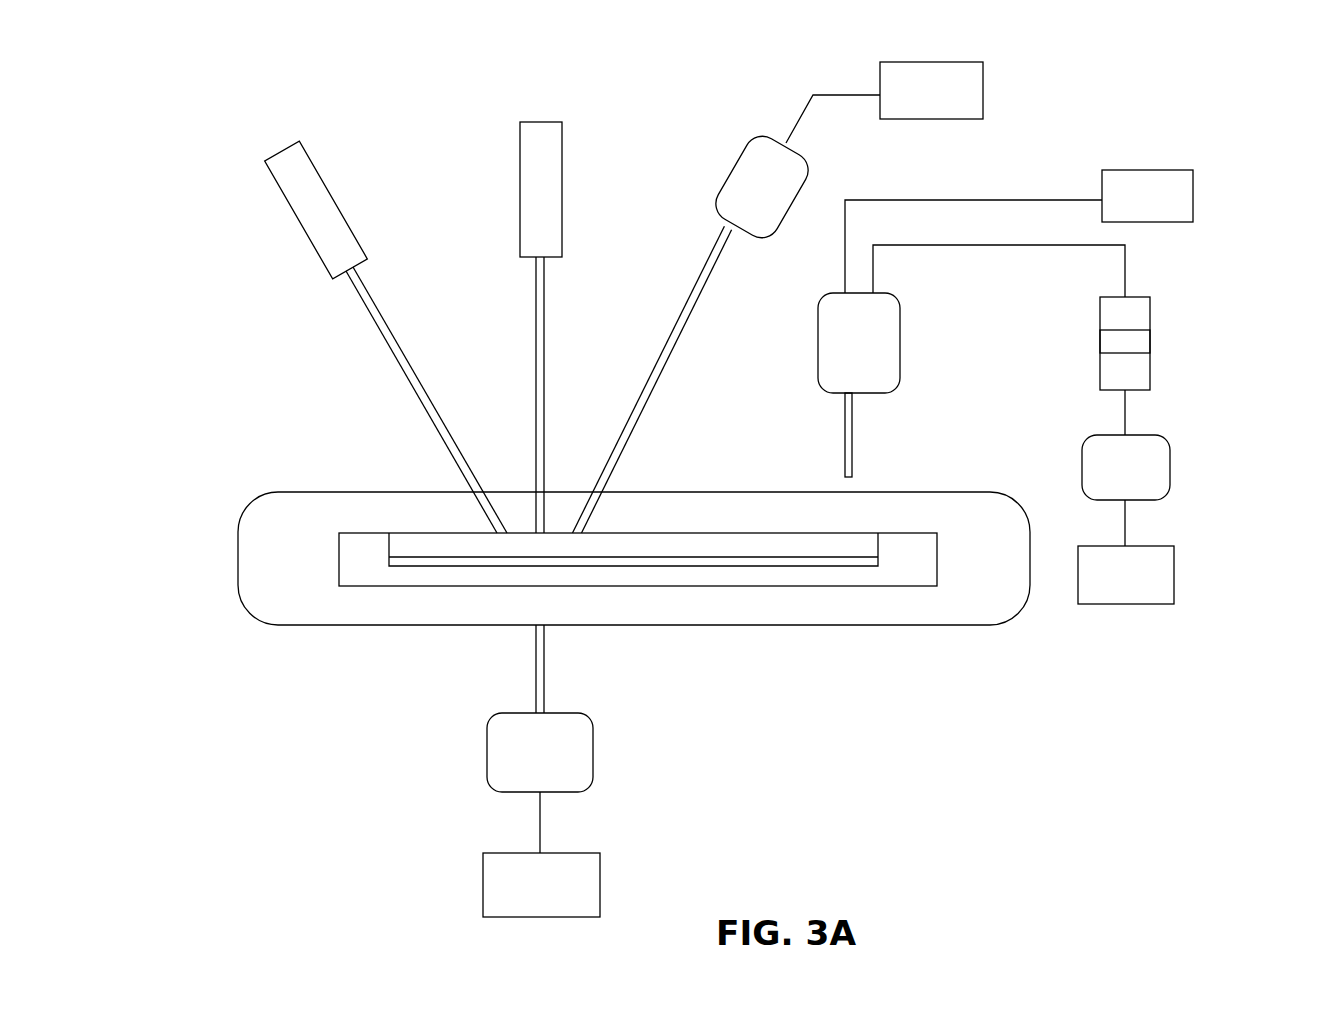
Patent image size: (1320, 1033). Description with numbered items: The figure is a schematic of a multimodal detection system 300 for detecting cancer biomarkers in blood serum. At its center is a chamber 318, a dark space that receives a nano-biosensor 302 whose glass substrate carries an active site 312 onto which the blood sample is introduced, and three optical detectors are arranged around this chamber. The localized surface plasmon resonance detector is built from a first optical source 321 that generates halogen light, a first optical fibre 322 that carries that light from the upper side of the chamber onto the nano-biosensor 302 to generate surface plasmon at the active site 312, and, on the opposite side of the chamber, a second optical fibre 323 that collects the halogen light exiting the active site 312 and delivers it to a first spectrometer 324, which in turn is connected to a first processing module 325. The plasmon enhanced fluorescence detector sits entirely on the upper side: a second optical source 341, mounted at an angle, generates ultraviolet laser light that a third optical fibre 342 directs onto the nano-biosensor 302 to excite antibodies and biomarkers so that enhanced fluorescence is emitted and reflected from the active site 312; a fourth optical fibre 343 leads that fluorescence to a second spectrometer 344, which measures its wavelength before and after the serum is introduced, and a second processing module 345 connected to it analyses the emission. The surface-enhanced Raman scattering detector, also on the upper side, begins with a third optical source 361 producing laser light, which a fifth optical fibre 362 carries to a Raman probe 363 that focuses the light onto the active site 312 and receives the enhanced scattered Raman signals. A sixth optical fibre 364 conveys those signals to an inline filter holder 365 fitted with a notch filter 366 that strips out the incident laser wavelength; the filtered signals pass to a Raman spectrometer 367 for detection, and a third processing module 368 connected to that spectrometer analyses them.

The multimodal detection system 300 is at (181, 56).
The nano-biosensor 302 is at (584, 611).
The active site 312 is at (590, 633).
The chamber 318 is at (600, 577).
The first optical source 321 is at (506, 189).
The first optical fibre 322 is at (503, 395).
The second optical fibre 323 is at (503, 669).
The first spectrometer 324 is at (503, 783).
The first processing module 325 is at (505, 899).
The second optical source 341 is at (286, 210).
The third optical fibre 342 is at (408, 400).
The fourth optical fibre 343 is at (652, 379).
The second spectrometer 344 is at (759, 184).
The second processing module 345 is at (914, 120).
The third optical source 361 is at (1185, 222).
The fifth optical fibre 362 is at (936, 249).
The Raman probe 363 is at (823, 385).
The sixth optical fibre 364 is at (999, 274).
The inline filter holder 365 is at (1087, 367).
The notch filter 366 is at (1160, 364).
The Raman spectrometer 367 is at (1164, 490).
The third processing module 368 is at (1090, 606).